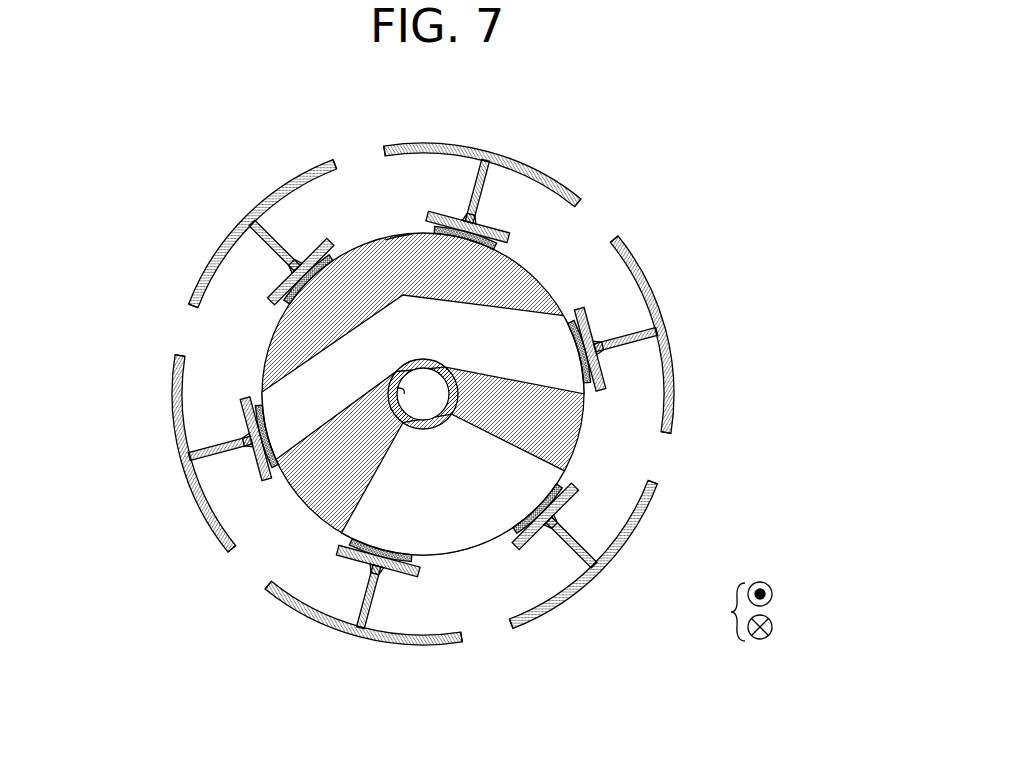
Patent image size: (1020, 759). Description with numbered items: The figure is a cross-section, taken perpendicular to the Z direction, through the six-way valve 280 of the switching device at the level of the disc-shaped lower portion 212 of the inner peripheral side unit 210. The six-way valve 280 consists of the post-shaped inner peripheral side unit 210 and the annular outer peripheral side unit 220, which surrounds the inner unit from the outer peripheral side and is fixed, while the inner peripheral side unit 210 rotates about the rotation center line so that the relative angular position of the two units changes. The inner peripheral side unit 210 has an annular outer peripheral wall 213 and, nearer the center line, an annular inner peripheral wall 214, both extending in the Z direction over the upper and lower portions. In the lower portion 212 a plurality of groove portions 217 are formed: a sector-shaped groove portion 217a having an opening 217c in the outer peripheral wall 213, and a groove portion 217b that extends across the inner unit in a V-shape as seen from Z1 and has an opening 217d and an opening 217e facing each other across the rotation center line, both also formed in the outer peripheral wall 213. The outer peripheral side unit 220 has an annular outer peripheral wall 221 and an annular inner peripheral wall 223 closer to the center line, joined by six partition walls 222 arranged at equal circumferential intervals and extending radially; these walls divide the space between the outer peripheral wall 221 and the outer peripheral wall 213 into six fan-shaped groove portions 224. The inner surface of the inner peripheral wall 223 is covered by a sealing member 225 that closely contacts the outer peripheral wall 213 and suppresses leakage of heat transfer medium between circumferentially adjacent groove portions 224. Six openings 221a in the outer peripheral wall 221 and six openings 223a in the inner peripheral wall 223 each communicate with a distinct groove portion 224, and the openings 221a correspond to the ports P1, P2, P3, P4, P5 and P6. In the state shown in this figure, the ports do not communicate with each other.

The six-way valve 280 is at (145, 98).
The inner peripheral side unit 210 is at (606, 140).
The lower portion 212 is at (530, 270).
The outer peripheral wall 213 is at (403, 235).
The inner peripheral wall 214 is at (390, 369).
The outer peripheral side unit 220 is at (660, 300).
The outer peripheral wall 221 is at (203, 262).
The opening 221a is at (386, 148).
The partition wall 222 is at (490, 182).
The inner peripheral wall 223 is at (315, 257).
The opening 223a is at (598, 398).
The groove portion 224 is at (660, 292).
The sealing member 225 is at (462, 228).
The groove portion 217 is at (266, 134).
The groove portion 217a is at (450, 520).
The groove portion 217b is at (350, 253).
The opening 217c is at (497, 536).
The opening 217d is at (265, 463).
The opening 217e is at (582, 367).
The port P1 is at (673, 187).
The port P2 is at (763, 488).
The port P3 is at (491, 710).
The port P4 is at (166, 628).
The port P5 is at (78, 310).
The port P6 is at (332, 108).